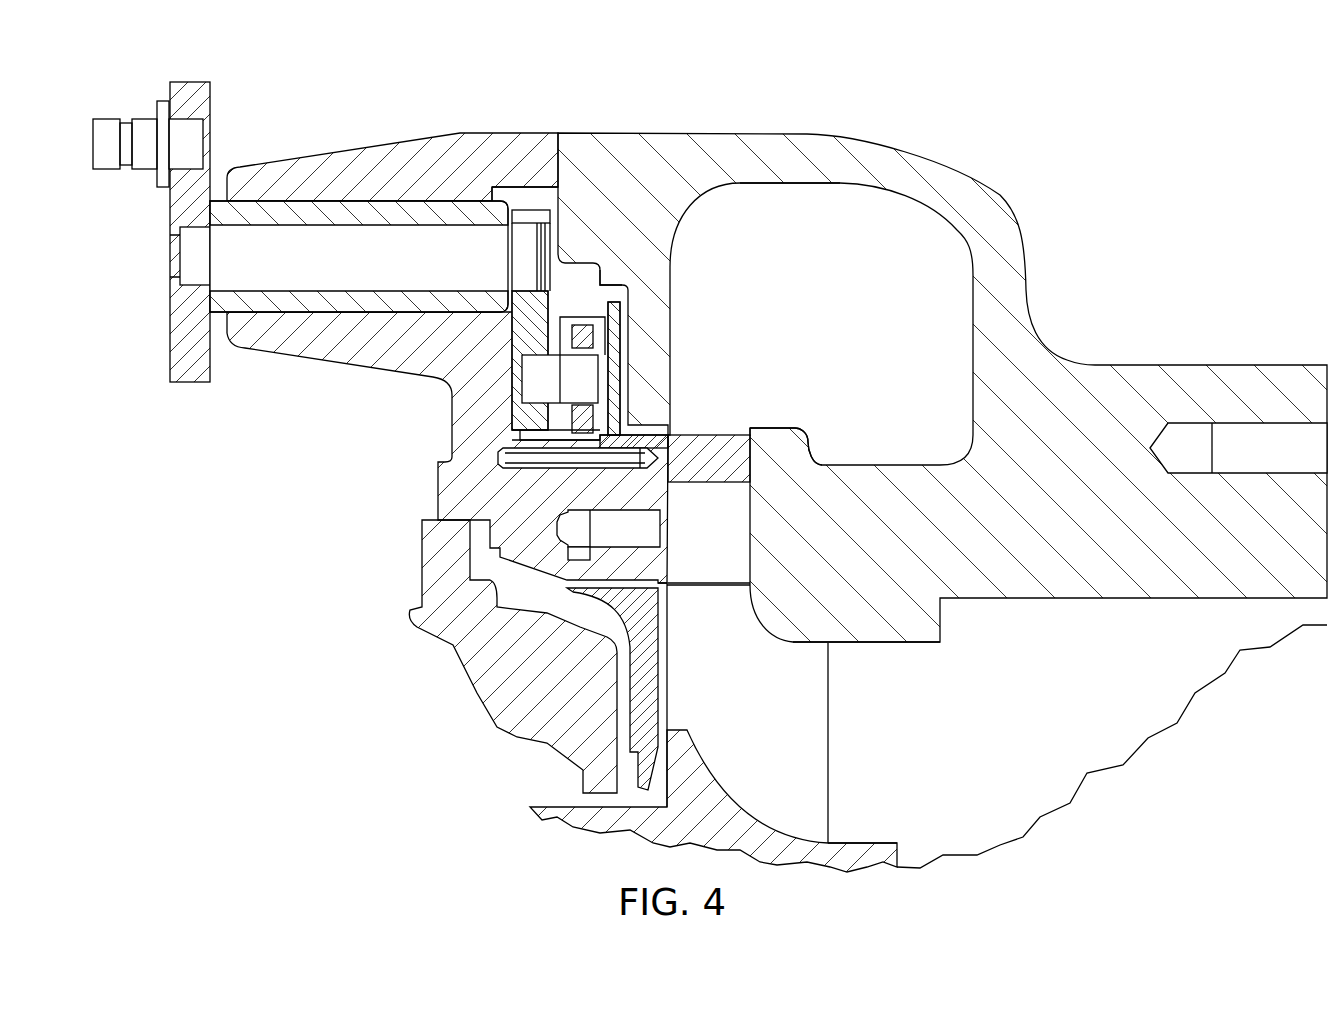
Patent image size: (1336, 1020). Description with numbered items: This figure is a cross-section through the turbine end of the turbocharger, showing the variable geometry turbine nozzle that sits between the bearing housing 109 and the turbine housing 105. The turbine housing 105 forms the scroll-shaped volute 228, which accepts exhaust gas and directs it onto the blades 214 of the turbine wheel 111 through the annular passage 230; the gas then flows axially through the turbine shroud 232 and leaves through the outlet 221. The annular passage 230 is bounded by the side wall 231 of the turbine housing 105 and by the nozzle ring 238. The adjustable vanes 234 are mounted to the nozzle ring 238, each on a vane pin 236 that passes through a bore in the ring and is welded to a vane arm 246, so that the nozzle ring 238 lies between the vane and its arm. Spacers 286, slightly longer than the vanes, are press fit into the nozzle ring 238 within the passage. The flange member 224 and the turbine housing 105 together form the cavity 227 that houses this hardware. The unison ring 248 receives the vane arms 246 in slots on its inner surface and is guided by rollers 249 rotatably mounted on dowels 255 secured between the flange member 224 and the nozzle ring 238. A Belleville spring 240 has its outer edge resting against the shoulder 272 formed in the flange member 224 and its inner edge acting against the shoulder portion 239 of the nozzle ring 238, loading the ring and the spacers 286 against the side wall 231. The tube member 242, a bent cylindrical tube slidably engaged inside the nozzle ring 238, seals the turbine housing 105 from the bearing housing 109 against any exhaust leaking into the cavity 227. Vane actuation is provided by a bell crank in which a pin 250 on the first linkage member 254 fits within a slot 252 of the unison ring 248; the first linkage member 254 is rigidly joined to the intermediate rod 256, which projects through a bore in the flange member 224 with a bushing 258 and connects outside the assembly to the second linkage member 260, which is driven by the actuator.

The turbine housing 105 is at (728, 134).
The bearing housing 109 is at (480, 700).
The turbine wheel 111 is at (912, 826).
The blades 214 is at (812, 722).
The outlet 221 is at (1098, 696).
The flange member 224 is at (378, 148).
The cavity 227 is at (528, 187).
The volute 228 is at (880, 276).
The annular passage 230 is at (739, 426).
The side wall 231 is at (792, 445).
The turbine shroud 232 is at (893, 643).
The adjustable vanes 234 is at (712, 570).
The vane pin 236 is at (568, 527).
The nozzle ring 238 is at (660, 478).
The shoulder portion 239 is at (640, 423).
The Belleville spring 240 is at (622, 380).
The tube member 242 is at (607, 583).
The vane arm 246 is at (580, 553).
The unison ring 248 is at (583, 333).
The rollers 249 is at (565, 440).
The pin 250 is at (527, 380).
The slot 252 is at (640, 332).
The first linkage member 254 is at (515, 317).
The dowels 255 is at (518, 457).
The intermediate rod 256 is at (215, 260).
The bushing 258 is at (214, 205).
The second linkage member 260 is at (175, 200).
The shoulder 272 is at (548, 262).
The spacers 286 is at (745, 452).